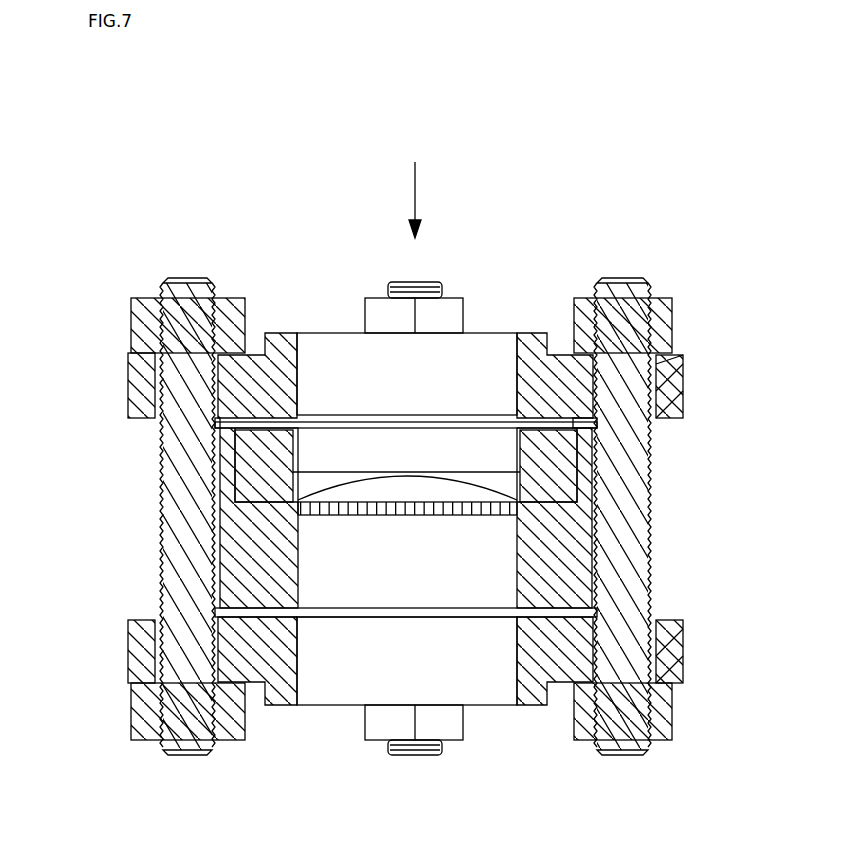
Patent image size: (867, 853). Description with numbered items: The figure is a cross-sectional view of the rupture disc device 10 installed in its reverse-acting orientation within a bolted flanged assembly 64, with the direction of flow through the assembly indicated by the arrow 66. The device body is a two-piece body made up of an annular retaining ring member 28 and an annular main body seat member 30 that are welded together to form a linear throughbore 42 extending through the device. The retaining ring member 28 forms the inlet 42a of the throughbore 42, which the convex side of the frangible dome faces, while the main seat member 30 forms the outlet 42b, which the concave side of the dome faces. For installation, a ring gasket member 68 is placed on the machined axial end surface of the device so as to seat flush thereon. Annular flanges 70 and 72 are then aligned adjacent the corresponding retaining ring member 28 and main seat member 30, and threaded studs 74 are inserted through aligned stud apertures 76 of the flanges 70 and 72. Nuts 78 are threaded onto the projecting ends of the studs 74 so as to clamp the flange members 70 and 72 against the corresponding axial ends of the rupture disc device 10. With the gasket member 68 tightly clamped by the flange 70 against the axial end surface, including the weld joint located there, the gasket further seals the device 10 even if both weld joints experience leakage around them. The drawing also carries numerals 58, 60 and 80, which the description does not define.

The rupture disc device 10 is at (615, 522).
The annular retaining ring member 28 is at (555, 465).
The annular main body seat member 30 is at (570, 578).
The linear throughbore 42 is at (348, 440).
The inlet 42a is at (465, 425).
The outlet 42b is at (500, 610).
The upper flange 58 is at (548, 296).
The lower flange 60 is at (540, 733).
The bolted flanged assembly 64 is at (70, 283).
The arrow 66 is at (418, 190).
The ring gasket member 68 is at (565, 425).
The annular flange 70 is at (272, 338).
The annular flange 72 is at (285, 685).
The threaded studs 74 is at (438, 283).
The stud apertures 76 is at (683, 383).
The nuts 78 is at (383, 310).
The lock washer 80 is at (686, 660).